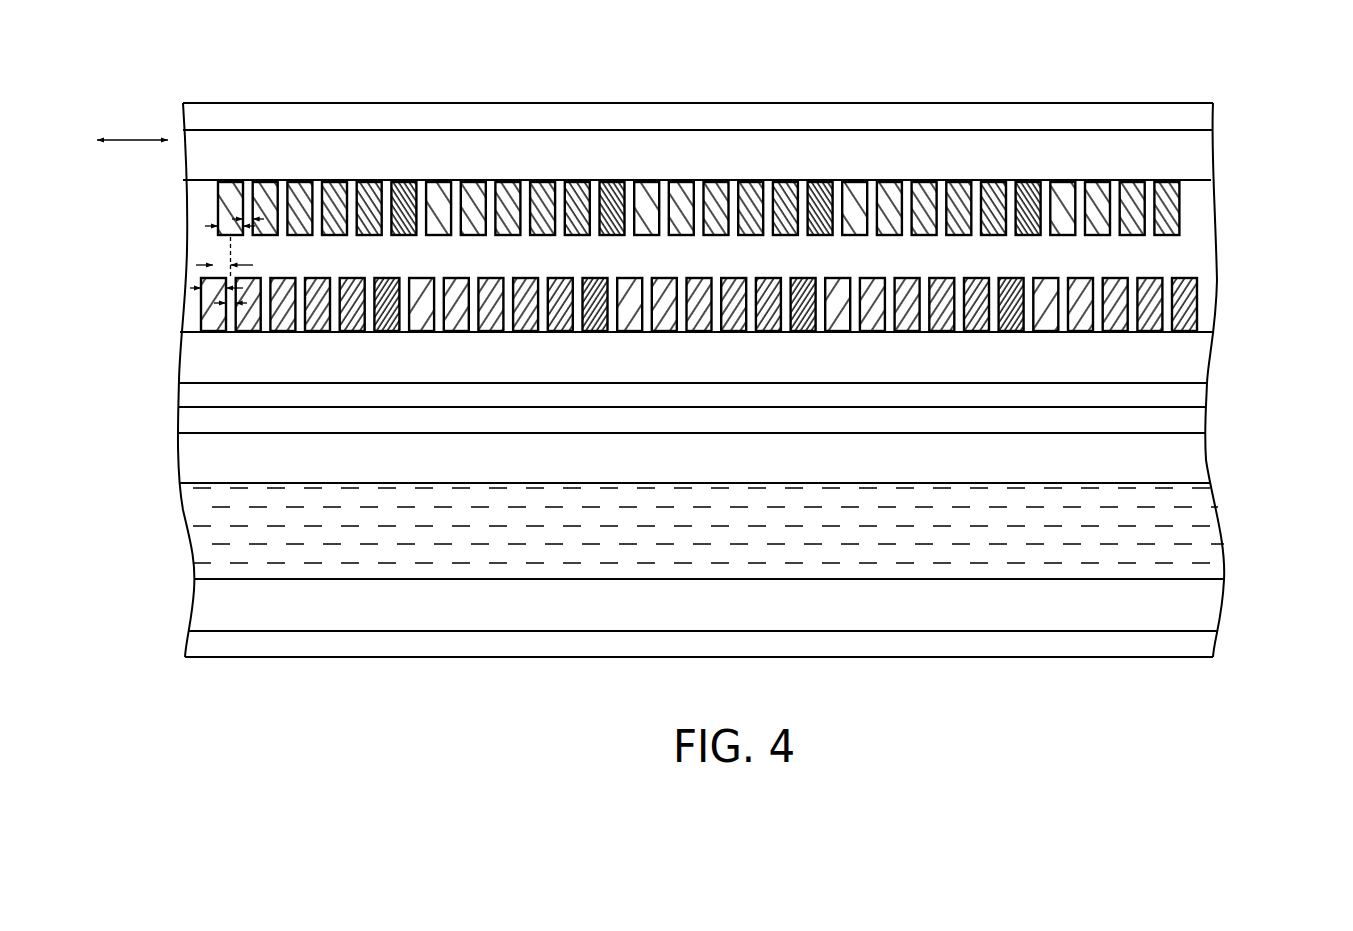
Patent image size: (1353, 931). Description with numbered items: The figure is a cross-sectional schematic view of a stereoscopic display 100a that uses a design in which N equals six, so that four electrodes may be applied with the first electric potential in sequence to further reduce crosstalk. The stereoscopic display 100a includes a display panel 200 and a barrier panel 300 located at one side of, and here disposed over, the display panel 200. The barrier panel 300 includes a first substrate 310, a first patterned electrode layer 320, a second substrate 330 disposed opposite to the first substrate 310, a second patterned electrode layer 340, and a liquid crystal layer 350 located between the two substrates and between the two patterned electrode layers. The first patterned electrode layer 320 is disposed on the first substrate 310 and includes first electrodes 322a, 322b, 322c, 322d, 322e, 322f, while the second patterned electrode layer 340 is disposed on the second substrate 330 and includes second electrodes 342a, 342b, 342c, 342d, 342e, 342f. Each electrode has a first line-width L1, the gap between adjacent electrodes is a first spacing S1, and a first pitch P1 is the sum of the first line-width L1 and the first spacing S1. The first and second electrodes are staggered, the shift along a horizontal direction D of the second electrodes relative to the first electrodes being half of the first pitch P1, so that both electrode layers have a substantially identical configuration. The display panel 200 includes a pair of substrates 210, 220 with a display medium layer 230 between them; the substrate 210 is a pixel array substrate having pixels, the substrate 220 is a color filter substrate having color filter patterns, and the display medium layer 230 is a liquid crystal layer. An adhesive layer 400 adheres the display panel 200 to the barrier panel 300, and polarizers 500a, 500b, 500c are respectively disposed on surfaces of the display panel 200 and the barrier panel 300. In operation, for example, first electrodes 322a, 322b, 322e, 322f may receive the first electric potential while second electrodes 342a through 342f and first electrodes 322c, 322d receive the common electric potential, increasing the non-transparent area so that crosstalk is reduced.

The stereoscopic display 100a is at (1290, 720).
The polarizer 500c is at (1197, 118).
The polarizer 500b is at (1197, 421).
The polarizer 500a is at (1197, 646).
The barrier panel 300 is at (1283, 128).
The second substrate 330 is at (1197, 155).
The second patterned electrode layer 340 is at (1228, 182).
The second electrode 342a is at (229, 184).
The second electrode 342b is at (265, 184).
The second electrode 342c is at (300, 184).
The second electrode 342d is at (334, 184).
The second electrode 342e is at (369, 184).
The second electrode 342f is at (404, 184).
The liquid crystal layer 350 is at (1197, 263).
The first patterned electrode layer 320 is at (1228, 278).
The first electrode 322a is at (213, 333).
The first electrode 322b is at (248, 333).
The first electrode 322c is at (283, 333).
The first electrode 322d is at (318, 333).
The first electrode 322e is at (352, 333).
The first electrode 322f is at (387, 333).
The first substrate 310 is at (1197, 365).
The adhesive layer 400 is at (1197, 395).
The display panel 200 is at (1283, 433).
The substrate 220 is at (1197, 460).
The display medium layer 230 is at (1228, 483).
The substrate 210 is at (1197, 610).
The horizontal direction D is at (132, 127).
The first pitch P1 is at (141, 183).
The first spacing S1 is at (247, 219).
The first line-width L1 is at (221, 226).